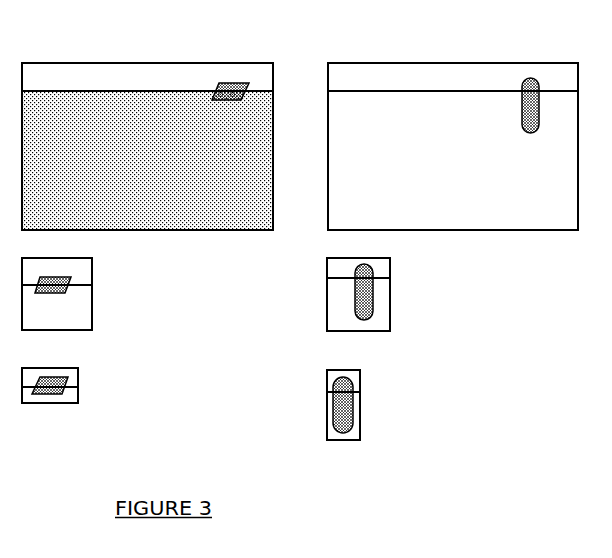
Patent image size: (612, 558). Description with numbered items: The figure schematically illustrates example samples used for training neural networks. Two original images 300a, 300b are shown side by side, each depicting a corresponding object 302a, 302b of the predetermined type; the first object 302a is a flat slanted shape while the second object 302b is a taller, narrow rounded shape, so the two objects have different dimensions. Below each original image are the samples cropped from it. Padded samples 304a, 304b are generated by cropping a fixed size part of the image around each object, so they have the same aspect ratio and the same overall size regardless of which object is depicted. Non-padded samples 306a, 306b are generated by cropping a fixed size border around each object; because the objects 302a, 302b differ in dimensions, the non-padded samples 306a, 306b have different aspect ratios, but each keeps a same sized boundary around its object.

The original image 300a is at (128, 63).
The object 302a is at (230, 82).
The original image 300b is at (428, 63).
The object 302b is at (528, 78).
The padded sample 304a is at (93, 300).
The non-padded sample 306a is at (78, 393).
The padded sample 304b is at (390, 302).
The non-padded sample 306b is at (360, 412).